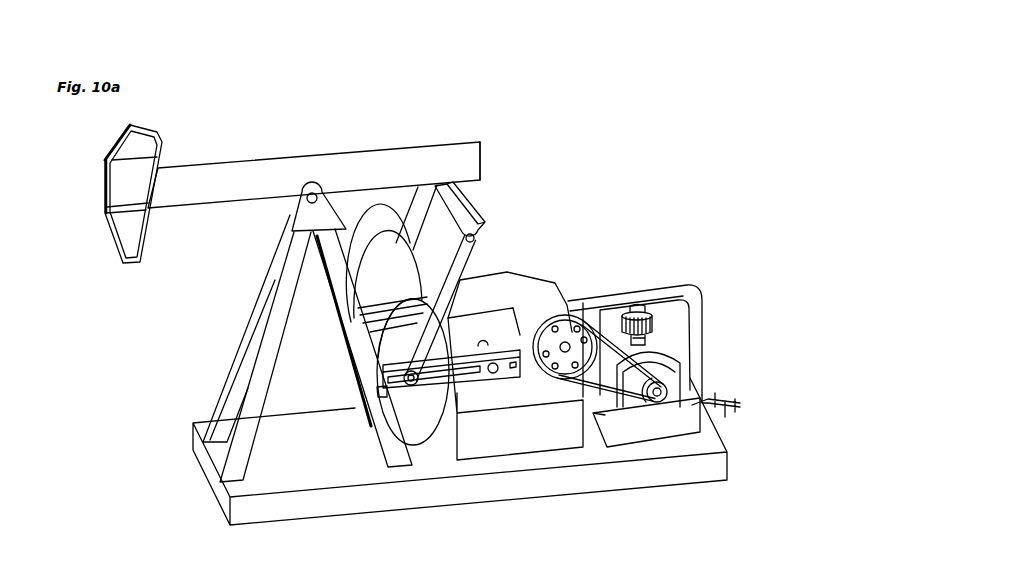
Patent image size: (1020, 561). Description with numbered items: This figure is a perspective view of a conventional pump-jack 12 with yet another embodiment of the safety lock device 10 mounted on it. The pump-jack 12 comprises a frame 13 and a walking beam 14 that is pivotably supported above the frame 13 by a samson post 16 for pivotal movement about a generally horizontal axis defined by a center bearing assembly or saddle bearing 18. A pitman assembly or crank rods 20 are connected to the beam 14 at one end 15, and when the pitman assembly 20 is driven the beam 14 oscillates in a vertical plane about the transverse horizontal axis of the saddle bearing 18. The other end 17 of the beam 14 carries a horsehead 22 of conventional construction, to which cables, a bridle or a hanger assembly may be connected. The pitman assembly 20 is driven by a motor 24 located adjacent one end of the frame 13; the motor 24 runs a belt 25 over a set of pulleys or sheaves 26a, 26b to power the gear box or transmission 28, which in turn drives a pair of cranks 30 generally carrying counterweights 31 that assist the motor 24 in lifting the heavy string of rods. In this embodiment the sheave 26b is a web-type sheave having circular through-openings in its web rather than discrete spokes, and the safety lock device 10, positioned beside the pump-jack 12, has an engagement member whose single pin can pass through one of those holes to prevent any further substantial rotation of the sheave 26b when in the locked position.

The pump-jack 12 is at (648, 50).
The frame 13 is at (305, 524).
The walking beam 14 is at (318, 128).
The one end of beam 15 is at (466, 136).
The samson post 16 is at (222, 325).
The other end of beam 17 is at (184, 146).
The center bearing assembly or saddle bearing 18 is at (263, 235).
The pitman assembly or crank rods 20 is at (402, 207).
The horsehead 22 is at (90, 215).
The motor 24 is at (686, 330).
The belt 25 is at (594, 394).
The pulley or sheave 26a is at (658, 406).
The pulley or sheave 26b is at (541, 384).
The gear box or transmission 28 is at (528, 284).
The cranks 30 is at (453, 390).
The counterweights 31 is at (357, 251).
The safety lock device 10 is at (745, 382).